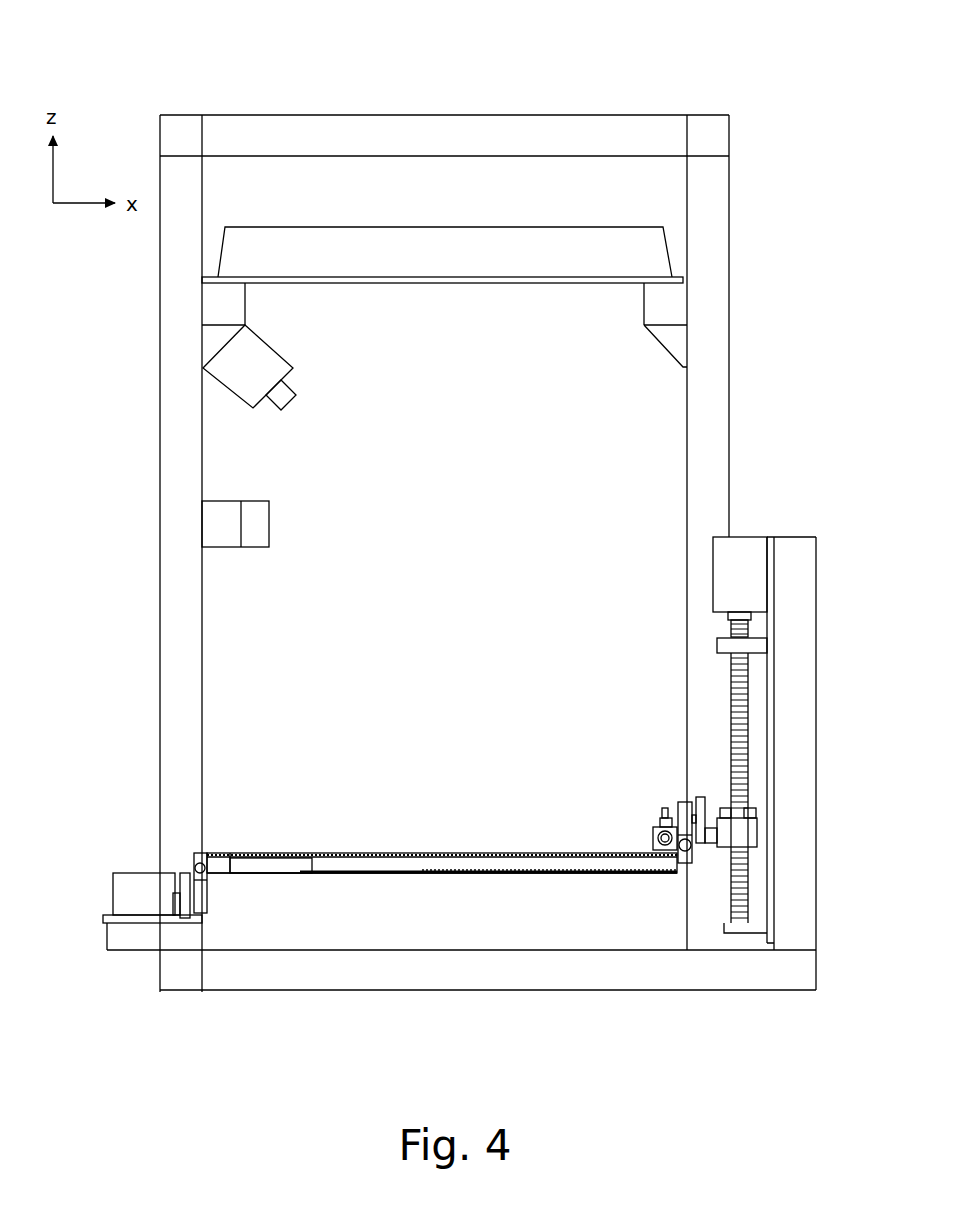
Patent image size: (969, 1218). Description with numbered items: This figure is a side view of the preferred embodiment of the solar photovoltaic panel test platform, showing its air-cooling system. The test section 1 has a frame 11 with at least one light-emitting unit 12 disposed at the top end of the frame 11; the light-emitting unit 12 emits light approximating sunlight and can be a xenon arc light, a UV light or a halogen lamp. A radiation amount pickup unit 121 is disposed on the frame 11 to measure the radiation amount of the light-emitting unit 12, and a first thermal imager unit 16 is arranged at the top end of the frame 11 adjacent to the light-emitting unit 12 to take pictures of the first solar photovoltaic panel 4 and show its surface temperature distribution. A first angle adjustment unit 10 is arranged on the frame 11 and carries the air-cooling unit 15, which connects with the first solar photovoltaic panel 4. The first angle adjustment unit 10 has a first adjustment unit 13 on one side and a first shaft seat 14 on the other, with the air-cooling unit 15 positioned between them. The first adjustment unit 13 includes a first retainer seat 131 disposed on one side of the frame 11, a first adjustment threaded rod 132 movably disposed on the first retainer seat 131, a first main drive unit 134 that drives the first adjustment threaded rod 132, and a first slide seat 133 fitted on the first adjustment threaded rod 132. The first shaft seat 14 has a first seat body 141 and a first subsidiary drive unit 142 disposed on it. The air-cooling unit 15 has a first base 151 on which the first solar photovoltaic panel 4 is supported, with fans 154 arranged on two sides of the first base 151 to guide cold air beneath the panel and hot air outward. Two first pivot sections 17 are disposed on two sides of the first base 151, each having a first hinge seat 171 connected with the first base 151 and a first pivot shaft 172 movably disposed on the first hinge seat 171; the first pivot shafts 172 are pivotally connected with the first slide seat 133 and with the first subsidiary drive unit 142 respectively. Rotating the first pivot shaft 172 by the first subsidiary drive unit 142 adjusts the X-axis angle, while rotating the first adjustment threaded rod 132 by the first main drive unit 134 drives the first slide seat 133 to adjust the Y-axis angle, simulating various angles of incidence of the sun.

The test section 1 is at (458, 503).
The frame 11 is at (312, 114).
The light-emitting unit 12 is at (444, 311).
The radiation amount pickup unit 121 is at (269, 522).
The first thermal imager unit 16 is at (272, 363).
The first adjustment unit 13 is at (704, 766).
The first main drive unit 134 is at (747, 550).
The first adjustment threaded rod 132 is at (737, 680).
The first retainer seat 131 is at (785, 737).
The first slide seat 133 is at (737, 837).
The first pivot section 17 is at (395, 817).
The first hinge seat 171 is at (207, 884).
The first pivot shaft 172 is at (176, 893).
The first shaft seat 14 is at (119, 929).
The first seat body 141 is at (122, 942).
The first subsidiary drive unit 142 is at (125, 886).
The air-cooling unit 15 is at (442, 923).
The first base 151 is at (563, 876).
The fan 154 is at (294, 862).
The first solar photovoltaic panel 4 is at (420, 853).
The first angle adjustment unit 10 is at (478, 890).